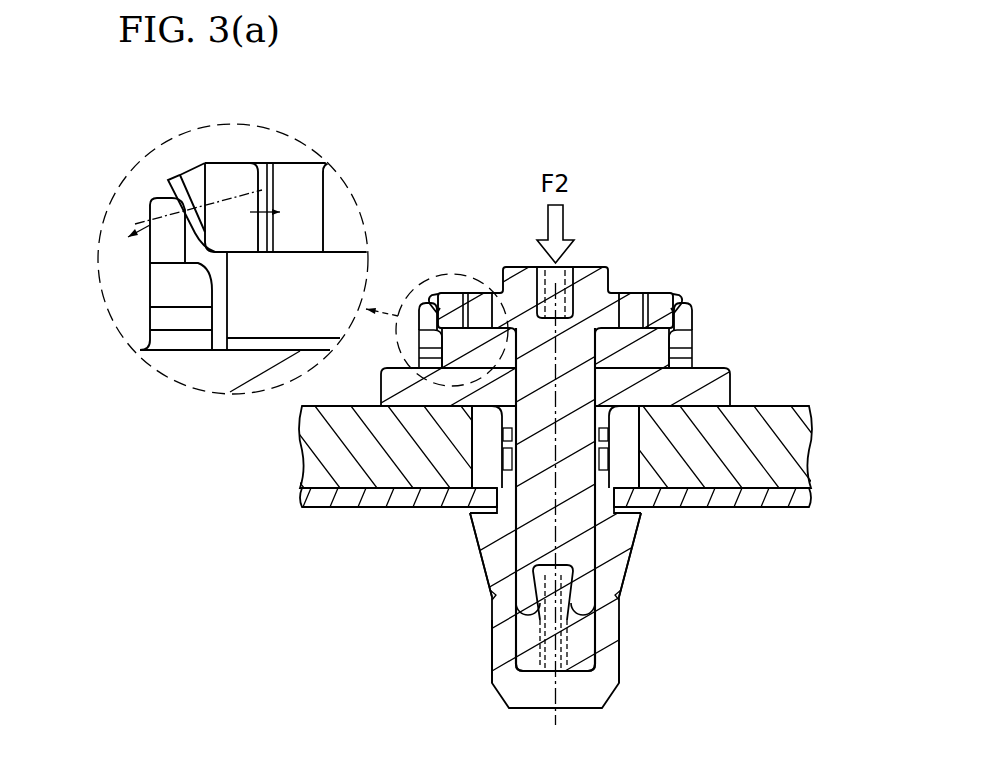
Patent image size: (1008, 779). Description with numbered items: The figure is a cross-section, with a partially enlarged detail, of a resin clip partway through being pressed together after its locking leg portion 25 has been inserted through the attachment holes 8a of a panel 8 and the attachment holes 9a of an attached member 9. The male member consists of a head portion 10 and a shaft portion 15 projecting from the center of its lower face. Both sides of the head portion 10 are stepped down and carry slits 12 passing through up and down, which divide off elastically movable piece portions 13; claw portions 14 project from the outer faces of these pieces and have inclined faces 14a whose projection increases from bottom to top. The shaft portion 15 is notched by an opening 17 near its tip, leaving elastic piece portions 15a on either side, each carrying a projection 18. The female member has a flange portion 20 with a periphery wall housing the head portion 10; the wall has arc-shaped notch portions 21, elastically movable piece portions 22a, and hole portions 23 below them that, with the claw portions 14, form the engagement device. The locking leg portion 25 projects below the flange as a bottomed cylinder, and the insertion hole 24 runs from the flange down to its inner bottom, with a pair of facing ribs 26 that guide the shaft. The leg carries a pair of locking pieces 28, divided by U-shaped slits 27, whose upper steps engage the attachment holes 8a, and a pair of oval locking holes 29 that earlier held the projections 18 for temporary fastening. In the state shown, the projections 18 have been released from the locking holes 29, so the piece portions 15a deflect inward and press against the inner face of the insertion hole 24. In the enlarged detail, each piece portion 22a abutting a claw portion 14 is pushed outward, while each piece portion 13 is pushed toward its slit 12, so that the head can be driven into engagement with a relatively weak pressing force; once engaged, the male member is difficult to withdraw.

The head portion 10 is at (500, 266).
The slits 12 is at (630, 293).
The piece portions 13 is at (672, 298).
The claw portions 14 is at (683, 306).
The inclined faces 14a is at (178, 221).
The flange portion 20 is at (812, 306).
The notch portions 21 is at (717, 358).
The piece portions 22a is at (684, 318).
The hole portions 23 is at (684, 346).
The insertion hole 24 is at (573, 650).
The locking leg portion 25 is at (490, 657).
The ribs 26 is at (554, 668).
The slits 27 is at (623, 452).
The locking pieces 28 is at (500, 513).
The locking holes 29 is at (347, 492).
The shaft portion 15 is at (540, 549).
The elastic piece portions 15a is at (520, 588).
The opening 17 is at (552, 600).
The projections 18 is at (533, 603).
The panel 8 is at (813, 500).
The attachment holes 8a is at (494, 497).
The attached member 9 is at (813, 460).
The attachment holes 9a is at (637, 462).